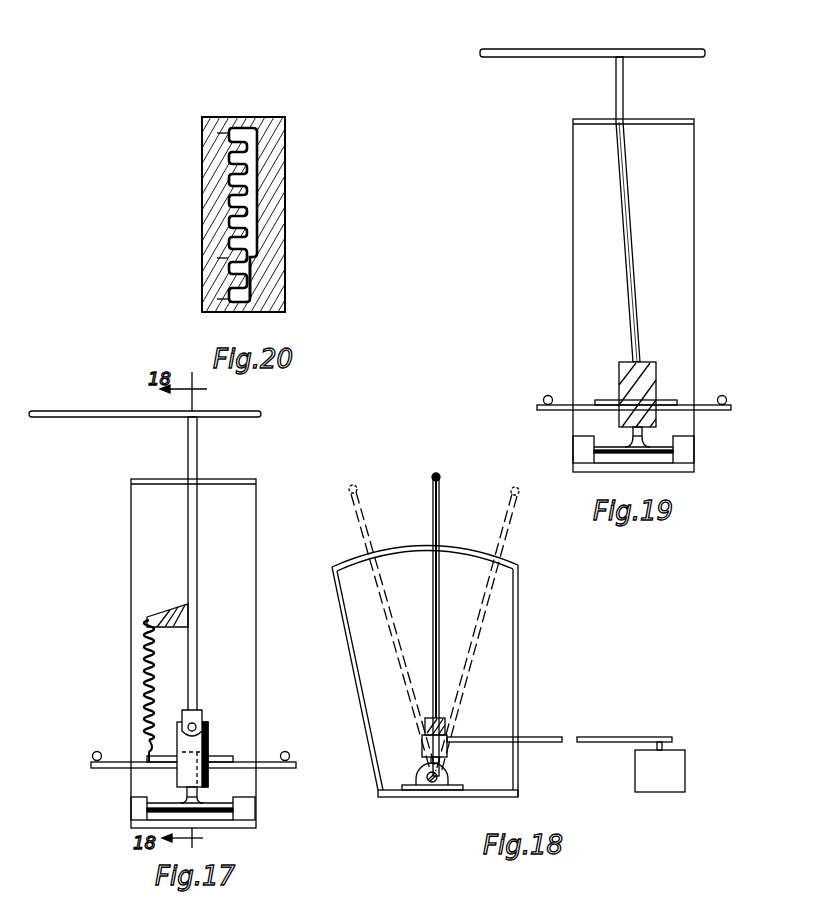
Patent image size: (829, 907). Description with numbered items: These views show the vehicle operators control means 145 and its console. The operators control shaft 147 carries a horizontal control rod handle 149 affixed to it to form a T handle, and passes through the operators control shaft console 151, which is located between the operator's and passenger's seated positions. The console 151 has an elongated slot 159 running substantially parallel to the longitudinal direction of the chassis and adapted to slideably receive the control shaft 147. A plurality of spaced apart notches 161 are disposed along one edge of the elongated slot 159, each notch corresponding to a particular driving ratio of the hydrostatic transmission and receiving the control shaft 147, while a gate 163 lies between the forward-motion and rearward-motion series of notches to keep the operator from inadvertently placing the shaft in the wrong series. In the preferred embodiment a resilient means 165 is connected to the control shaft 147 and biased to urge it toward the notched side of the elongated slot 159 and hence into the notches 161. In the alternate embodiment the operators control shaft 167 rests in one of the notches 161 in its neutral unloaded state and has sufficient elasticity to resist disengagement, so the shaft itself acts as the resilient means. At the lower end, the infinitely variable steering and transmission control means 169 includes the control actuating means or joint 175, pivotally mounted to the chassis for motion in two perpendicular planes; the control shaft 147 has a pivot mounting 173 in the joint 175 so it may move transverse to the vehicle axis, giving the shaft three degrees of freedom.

In FIG. 17, the vehicle operators control means 145 is at (101, 627).
In FIG. 18, the vehicle operators control means 145 is at (573, 640).
In FIG. 19, the vehicle operators control means 145 is at (754, 211).
In FIG. 17, the vehicle operators control shaft 147 is at (197, 448).
In FIG. 18, the vehicle operators control shaft 147 is at (440, 511).
In FIG. 19, the vehicle operators control shaft 147 is at (624, 92).
In FIG. 17, the control rod handle 149 is at (100, 414).
In FIG. 18, the control rod handle 149 is at (433, 475).
In FIG. 19, the control rod handle 149 is at (516, 52).
In FIG. 17, the operators control shaft console 151 is at (147, 479).
In FIG. 18, the operators control shaft console 151 is at (518, 585).
In FIG. 19, the operators control shaft console 151 is at (573, 167).
In FIG. 20, the elongated slot 159 is at (254, 207).
In FIG. 20, the notches 161 is at (228, 137).
In FIG. 20, the gate 163 is at (254, 268).
In FIG. 17, the resilient means 165 is at (140, 700).
In FIG. 19, the operators control shaft 167 is at (626, 272).
In FIG. 17, the infinitely variable steering and transmission control means 169 is at (240, 753).
In FIG. 18, the infinitely variable steering and transmission control means 169 is at (497, 725).
In FIG. 19, the infinitely variable steering and transmission control means 169 is at (677, 386).
In FIG. 17, the pivot mounting 173 is at (196, 725).
In FIG. 17, the control actuating means or joint 175 is at (208, 735).
In FIG. 18, the control actuating means or joint 175 is at (447, 725).
In FIG. 19, the control actuating means or joint 175 is at (657, 368).